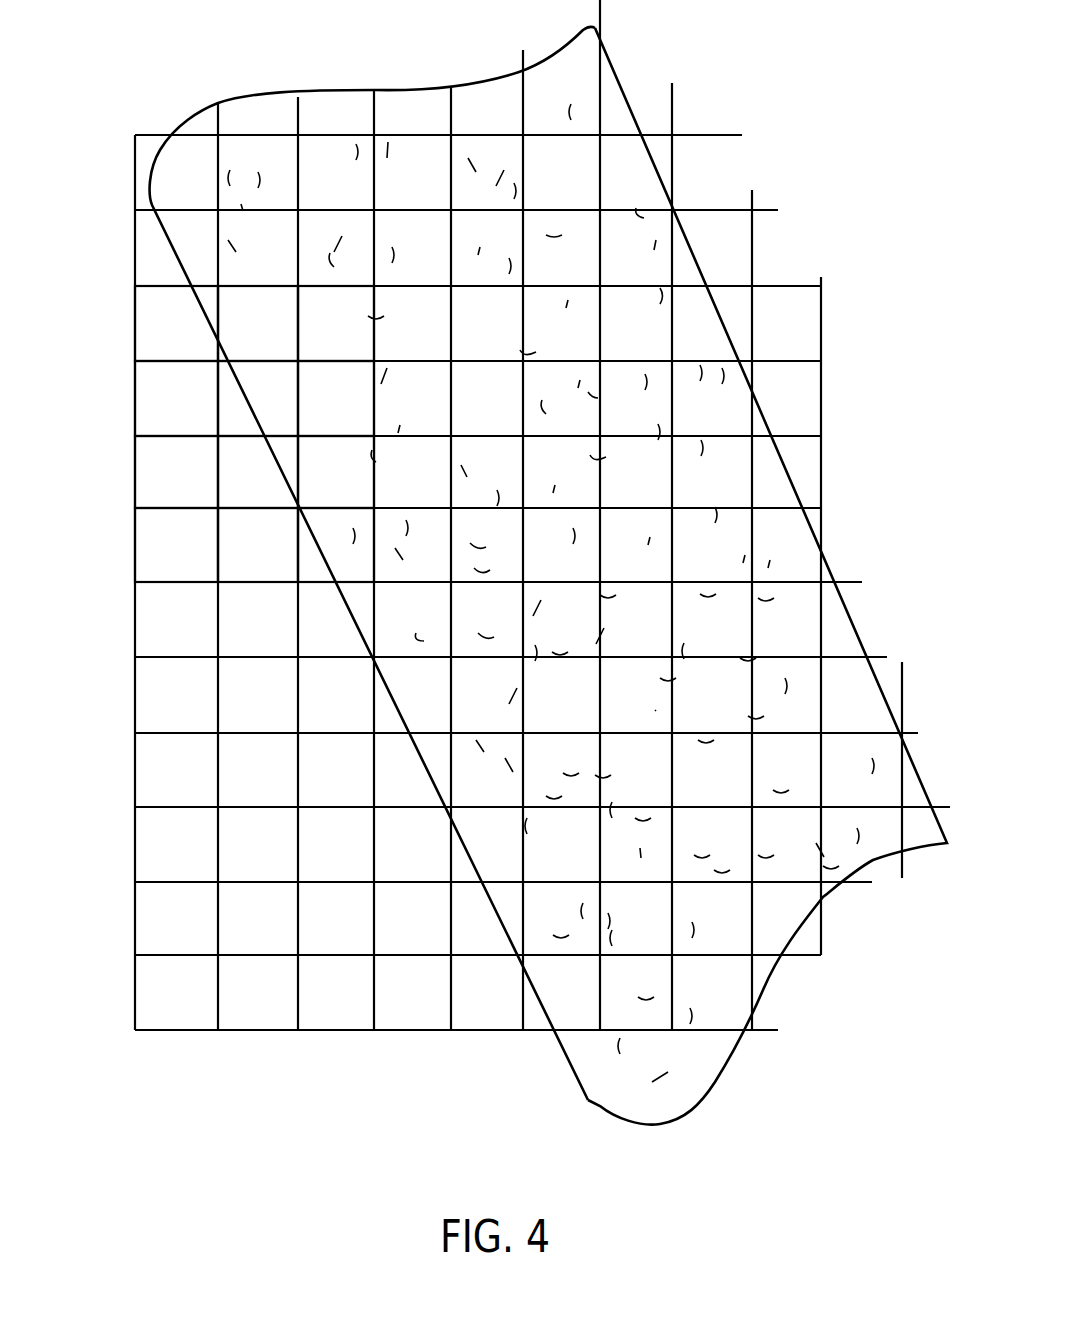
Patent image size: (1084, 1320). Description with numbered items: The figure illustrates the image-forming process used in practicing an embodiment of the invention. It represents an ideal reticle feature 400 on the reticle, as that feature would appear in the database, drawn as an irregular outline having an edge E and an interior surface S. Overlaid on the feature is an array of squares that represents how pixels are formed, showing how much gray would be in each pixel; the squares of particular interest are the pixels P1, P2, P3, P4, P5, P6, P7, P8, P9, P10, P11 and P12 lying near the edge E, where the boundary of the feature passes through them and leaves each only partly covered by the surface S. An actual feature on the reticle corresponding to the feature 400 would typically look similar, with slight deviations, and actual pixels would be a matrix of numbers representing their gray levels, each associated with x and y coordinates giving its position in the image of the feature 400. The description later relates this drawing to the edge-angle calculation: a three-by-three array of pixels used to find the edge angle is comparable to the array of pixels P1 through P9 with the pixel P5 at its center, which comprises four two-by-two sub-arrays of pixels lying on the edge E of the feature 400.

The ideal reticle feature 400 is at (512, 582).
The edge E is at (162, 229).
The surface S is at (551, 593).
The pixel P1 is at (176, 323).
The pixel P2 is at (258, 323).
The pixel P3 is at (336, 323).
The pixel P4 is at (176, 398).
The pixel P5 is at (258, 398).
The pixel P6 is at (336, 398).
The pixel P7 is at (176, 472).
The pixel P8 is at (258, 472).
The pixel P9 is at (336, 472).
The pixel P10 is at (176, 545).
The pixel P11 is at (258, 545).
The pixel P12 is at (336, 545).